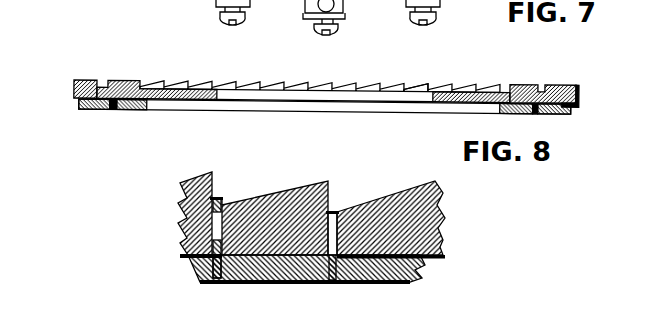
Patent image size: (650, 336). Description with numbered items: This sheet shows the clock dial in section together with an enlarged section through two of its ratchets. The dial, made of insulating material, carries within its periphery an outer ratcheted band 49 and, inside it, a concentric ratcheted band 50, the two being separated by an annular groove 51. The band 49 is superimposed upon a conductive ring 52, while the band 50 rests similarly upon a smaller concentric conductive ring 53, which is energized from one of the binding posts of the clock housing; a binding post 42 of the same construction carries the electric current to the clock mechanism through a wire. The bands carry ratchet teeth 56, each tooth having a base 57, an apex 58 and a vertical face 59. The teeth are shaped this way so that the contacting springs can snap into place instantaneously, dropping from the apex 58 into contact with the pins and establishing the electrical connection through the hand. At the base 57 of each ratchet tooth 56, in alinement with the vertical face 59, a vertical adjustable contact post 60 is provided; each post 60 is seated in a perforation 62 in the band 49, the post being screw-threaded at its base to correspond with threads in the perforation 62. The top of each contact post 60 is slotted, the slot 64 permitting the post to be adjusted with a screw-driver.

In FIG. 7, the binding post 42 is at (305, 5).
In FIG. 7, the ratcheted band 49 is at (85, 80).
In FIG. 8, the ratcheted band 49 is at (348, 199).
In FIG. 7, the concentric ratcheted band 50 is at (127, 80).
In FIG. 8, the concentric ratcheted band 50 is at (348, 199).
In FIG. 7, the annular groove 51 is at (543, 88).
In FIG. 7, the conductive ring 52 is at (90, 110).
In FIG. 8, the conductive ring 52 is at (392, 283).
In FIG. 7, the conductive ring 53 is at (133, 110).
In FIG. 7, the ratchet teeth 56 is at (290, 84).
In FIG. 8, the ratchet teeth 56 is at (417, 183).
In FIG. 8, the base 57 is at (335, 212).
In FIG. 7, the apex 58 is at (425, 85).
In FIG. 8, the apex 58 is at (328, 211).
In FIG. 7, the vertical face 59 is at (440, 86).
In FIG. 8, the vertical face 59 is at (212, 183).
In FIG. 8, the adjustable contact post 60 is at (210, 257).
In FIG. 8, the perforation 62 is at (216, 281).
In FIG. 8, the slot 64 is at (222, 204).